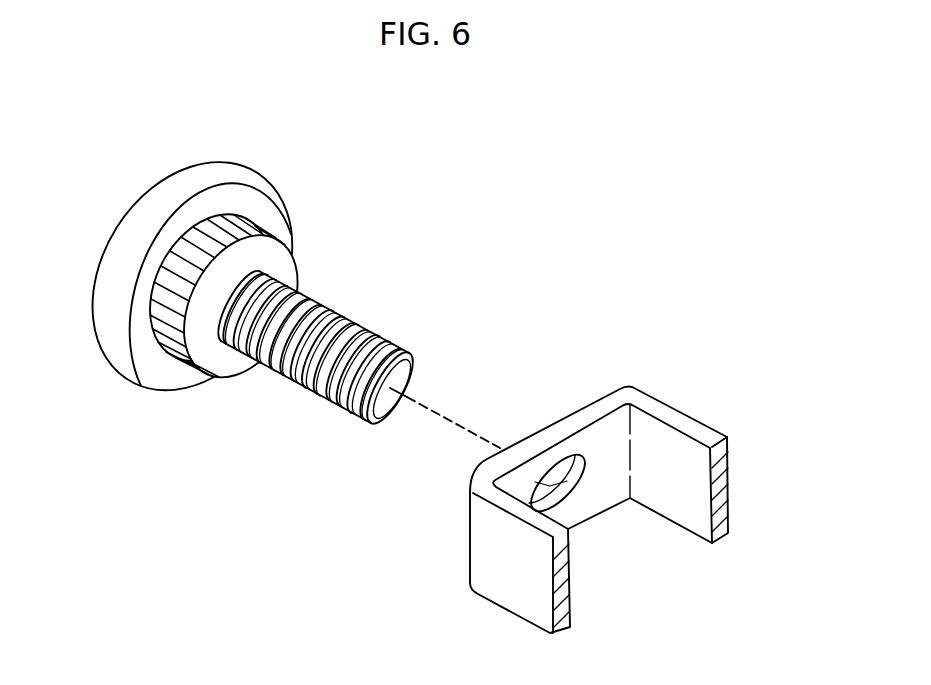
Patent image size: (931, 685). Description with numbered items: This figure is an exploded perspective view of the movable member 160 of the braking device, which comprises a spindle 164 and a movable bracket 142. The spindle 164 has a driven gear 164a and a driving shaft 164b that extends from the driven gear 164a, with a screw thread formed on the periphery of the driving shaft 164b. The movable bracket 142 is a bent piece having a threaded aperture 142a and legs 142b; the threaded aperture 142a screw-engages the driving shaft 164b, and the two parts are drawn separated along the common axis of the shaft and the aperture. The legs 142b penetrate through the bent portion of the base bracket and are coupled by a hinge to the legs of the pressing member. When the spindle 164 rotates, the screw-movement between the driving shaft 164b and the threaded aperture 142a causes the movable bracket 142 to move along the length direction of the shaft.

The movable member 160 is at (536, 207).
The spindle 164 is at (178, 186).
The driven gear 164a is at (258, 226).
The driving shaft 164b is at (352, 318).
The movable bracket 142 is at (724, 414).
The threaded aperture 142a is at (561, 470).
The legs 142b is at (661, 404).